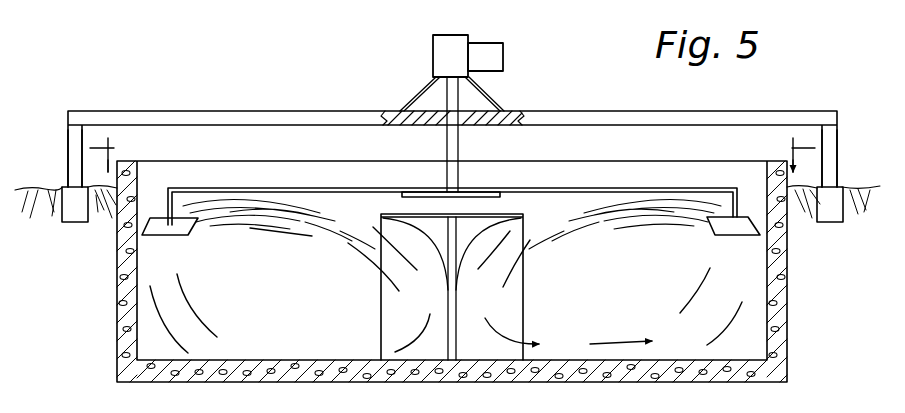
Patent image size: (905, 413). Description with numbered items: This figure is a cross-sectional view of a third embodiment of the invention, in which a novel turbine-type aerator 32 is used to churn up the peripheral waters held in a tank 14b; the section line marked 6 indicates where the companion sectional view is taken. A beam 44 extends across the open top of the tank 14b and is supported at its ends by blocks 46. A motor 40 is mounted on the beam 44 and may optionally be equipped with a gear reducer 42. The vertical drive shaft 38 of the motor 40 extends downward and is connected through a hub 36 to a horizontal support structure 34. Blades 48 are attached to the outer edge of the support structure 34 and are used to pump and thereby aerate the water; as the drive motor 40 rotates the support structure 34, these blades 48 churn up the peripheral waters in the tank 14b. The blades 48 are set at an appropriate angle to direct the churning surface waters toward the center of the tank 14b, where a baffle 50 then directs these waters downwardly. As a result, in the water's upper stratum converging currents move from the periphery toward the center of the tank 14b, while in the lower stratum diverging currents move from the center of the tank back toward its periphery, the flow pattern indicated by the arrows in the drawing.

The tank 14b is at (112, 299).
The turbine-type aerator 32 is at (300, 104).
The horizontal support structure 34 is at (601, 184).
The hub 36 is at (480, 198).
The vertical drive shaft 38 is at (460, 140).
The motor 40 is at (504, 54).
The gear reducer 42 is at (436, 52).
The beam 44 is at (556, 110).
The blocks 46 is at (68, 157).
The blades 48 is at (186, 224).
The baffle 50 is at (526, 282).
The section line 6- 6 is at (452, 148).